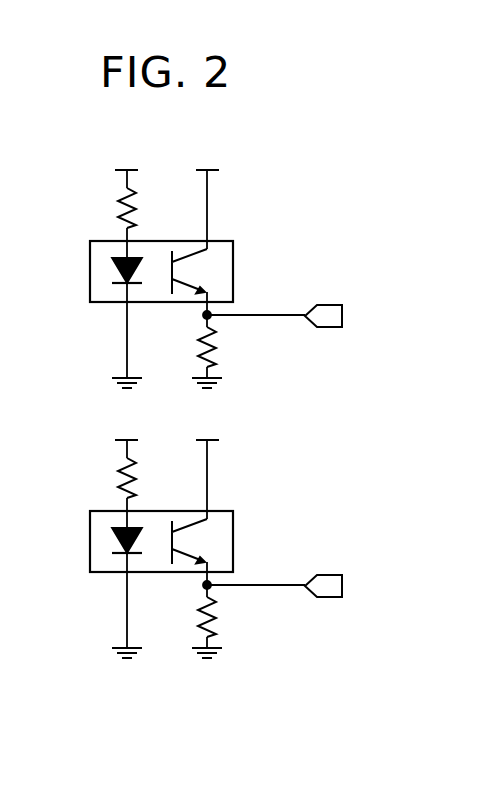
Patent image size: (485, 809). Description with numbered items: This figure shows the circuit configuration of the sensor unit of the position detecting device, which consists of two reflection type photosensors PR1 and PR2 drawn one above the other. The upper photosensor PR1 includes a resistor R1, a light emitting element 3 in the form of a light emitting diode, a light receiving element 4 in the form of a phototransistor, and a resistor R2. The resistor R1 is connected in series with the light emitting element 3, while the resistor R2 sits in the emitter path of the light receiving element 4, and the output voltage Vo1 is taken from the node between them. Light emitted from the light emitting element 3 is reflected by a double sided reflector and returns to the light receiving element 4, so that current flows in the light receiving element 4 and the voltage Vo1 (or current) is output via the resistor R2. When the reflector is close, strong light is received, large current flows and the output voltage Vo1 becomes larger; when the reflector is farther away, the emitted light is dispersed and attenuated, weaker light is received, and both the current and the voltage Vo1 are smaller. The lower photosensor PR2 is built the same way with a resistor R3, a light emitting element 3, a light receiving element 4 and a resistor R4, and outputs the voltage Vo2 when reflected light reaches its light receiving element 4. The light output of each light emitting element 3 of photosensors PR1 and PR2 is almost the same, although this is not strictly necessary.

The light emitting element 3 is at (106, 275).
The light receiving element 4 is at (202, 271).
The resistor R1 is at (109, 208).
The resistor R2 is at (190, 347).
The resistor R3 is at (109, 478).
The resistor R4 is at (190, 617).
The reflection type photosensor PR1 is at (130, 271).
The reflection type photosensor PR2 is at (130, 541).
The output voltage Vo1 is at (323, 301).
The output voltage Vo2 is at (323, 572).